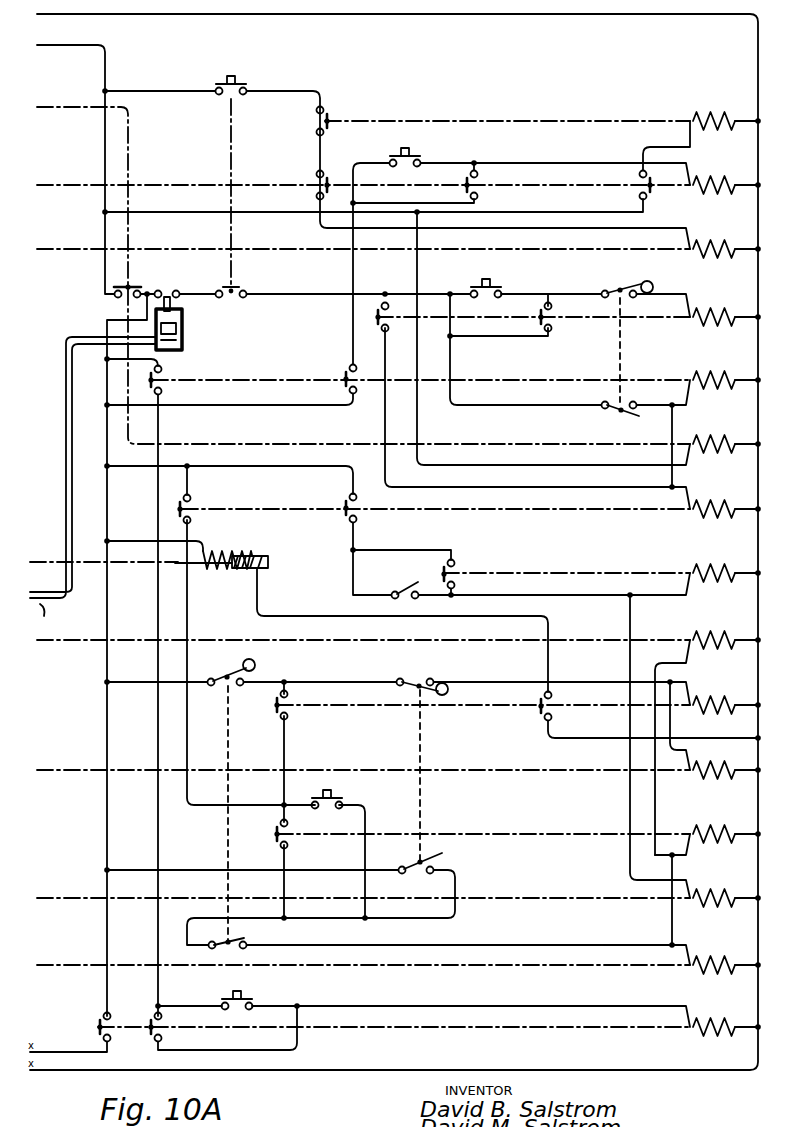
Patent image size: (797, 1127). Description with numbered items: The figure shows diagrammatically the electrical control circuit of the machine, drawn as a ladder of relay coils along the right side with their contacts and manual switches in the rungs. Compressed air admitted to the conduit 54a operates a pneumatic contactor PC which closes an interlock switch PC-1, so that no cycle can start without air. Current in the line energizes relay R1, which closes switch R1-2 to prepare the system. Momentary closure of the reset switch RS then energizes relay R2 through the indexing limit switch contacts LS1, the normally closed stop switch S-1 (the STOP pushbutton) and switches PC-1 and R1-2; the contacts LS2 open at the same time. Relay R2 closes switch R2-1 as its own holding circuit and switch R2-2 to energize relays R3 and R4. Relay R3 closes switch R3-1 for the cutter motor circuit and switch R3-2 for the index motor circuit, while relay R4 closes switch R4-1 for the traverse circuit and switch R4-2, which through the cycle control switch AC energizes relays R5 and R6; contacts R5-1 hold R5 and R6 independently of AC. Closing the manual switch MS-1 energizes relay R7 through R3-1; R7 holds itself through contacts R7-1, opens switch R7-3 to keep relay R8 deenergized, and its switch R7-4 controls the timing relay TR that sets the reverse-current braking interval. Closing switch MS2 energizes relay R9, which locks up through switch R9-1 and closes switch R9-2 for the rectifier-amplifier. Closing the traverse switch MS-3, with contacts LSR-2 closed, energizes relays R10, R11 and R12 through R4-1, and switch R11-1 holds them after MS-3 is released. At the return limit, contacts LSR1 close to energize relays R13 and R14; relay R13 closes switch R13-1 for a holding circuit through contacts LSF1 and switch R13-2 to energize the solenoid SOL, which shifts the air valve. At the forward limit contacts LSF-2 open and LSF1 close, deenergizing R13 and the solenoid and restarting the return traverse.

The timing relay TR is at (543, 110).
The relay R7 is at (394, 174).
The relay R8 is at (394, 238).
The relay R2 is at (569, 306).
The relay R3 is at (456, 369).
The relay R1 is at (394, 272).
The relay R4 is at (471, 498).
The relay R5 is at (395, 562).
The relay R12 is at (393, 629).
The relay R13 is at (519, 694).
The relay R14 is at (394, 759).
The relay R11 is at (519, 823).
The relay R6 is at (394, 887).
The relay R10 is at (394, 954).
The relay R9 is at (429, 1016).
The switch R7-3 is at (315, 182).
The contacts R7-1 is at (482, 184).
The switch R7-4 is at (638, 197).
The switch R1-2 is at (119, 300).
The interlock switch PC-1 is at (177, 288).
The stop switch S-1 is at (244, 288).
The pneumatic contactor PC is at (187, 315).
The conduit 54a is at (55, 618).
The switch R2-2 is at (380, 302).
The switch R2-1 is at (553, 331).
The switch R3-2 is at (167, 375).
The switch R3-1 is at (348, 366).
The switch R4-1 is at (192, 511).
The switch R4-2 is at (358, 521).
The contacts R5-1 is at (462, 570).
The switch R13-1 is at (291, 706).
The switch R13-2 is at (542, 729).
The switch R11-1 is at (291, 847).
The switch R9-2 is at (96, 1020).
The switch R9-1 is at (172, 1039).
The stop switch STOP is at (230, 76).
The manually operable switch MS-1 is at (446, 153).
The reset switch RS is at (516, 287).
The traverse switch MS-3 is at (365, 801).
The switch MS-2 MS2 is at (288, 998).
The indexing limit switch contacts LS1 is at (625, 334).
The indexing limit switch contacts LS2 is at (619, 419).
The limit switch contacts LSR-1 LSR1 is at (258, 677).
The limit switch contacts LSF-1 LSF1 is at (423, 677).
The limit switch contacts LSF-2 is at (441, 868).
The limit switch contacts LSR-2 is at (240, 947).
The cycle control switch AC is at (407, 590).
The solenoid SOL is at (246, 551).